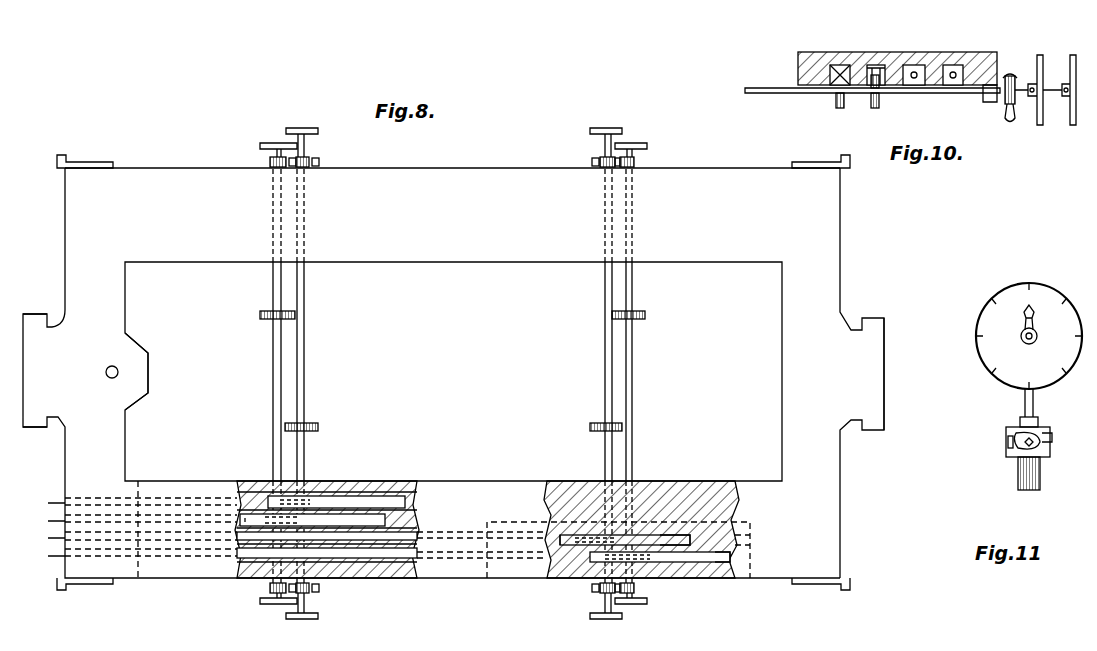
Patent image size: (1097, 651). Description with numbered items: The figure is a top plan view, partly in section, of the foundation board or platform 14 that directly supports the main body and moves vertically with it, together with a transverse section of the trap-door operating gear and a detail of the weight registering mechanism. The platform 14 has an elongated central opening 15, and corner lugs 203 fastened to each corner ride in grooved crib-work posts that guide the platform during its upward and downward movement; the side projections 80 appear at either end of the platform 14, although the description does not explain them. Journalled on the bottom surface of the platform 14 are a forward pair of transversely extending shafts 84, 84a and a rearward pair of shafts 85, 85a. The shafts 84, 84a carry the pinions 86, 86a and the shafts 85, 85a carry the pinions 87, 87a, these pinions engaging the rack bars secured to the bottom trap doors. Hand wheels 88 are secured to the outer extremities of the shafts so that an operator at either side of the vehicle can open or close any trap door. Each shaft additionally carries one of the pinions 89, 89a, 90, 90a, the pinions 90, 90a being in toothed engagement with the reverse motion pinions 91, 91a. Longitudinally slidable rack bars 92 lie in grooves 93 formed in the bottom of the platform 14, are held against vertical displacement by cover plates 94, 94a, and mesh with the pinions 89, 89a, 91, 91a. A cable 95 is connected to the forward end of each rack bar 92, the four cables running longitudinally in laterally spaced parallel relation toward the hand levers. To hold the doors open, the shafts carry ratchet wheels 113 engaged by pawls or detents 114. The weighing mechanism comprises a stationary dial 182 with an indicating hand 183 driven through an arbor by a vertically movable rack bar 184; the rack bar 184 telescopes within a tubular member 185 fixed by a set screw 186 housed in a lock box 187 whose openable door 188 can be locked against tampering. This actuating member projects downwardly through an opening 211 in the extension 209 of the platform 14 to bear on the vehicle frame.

In FIG. 8, the foundation board or platform 14 is at (453, 373).
In FIG. 10, the foundation board or platform 14 is at (990, 52).
In FIG. 8, the elongated central opening 15 is at (453, 371).
In FIG. 8, the end protrusion 80 is at (44, 424).
In FIG. 8, the transversely extending shaft 84 is at (273, 396).
In FIG. 10, the transversely extending shaft 84 is at (900, 93).
In FIG. 8, the transversely extending shaft 84a is at (305, 396).
In FIG. 8, the transversely extending shaft 85 is at (605, 404).
In FIG. 8, the transversely extending shaft 85a is at (633, 398).
In FIG. 8, the pinion 86 is at (260, 322).
In FIG. 8, the pinion 86a is at (318, 427).
In FIG. 8, the pinion 87 is at (590, 427).
In FIG. 8, the pinion 87a is at (645, 315).
In FIG. 8, the hand wheel 88 is at (276, 144).
In FIG. 10, the hand wheel 88 is at (1072, 118).
In FIG. 8, the pinion 89 is at (262, 481).
In FIG. 10, the pinion 89 is at (875, 108).
In FIG. 8, the pinion 89a is at (300, 481).
In FIG. 8, the pinion 90 is at (610, 500).
In FIG. 8, the pinion 90a is at (640, 585).
In FIG. 8, the reverse motion pinion 91 is at (575, 560).
In FIG. 8, the reverse motion pinion 91a is at (680, 585).
In FIG. 8, the rack bar 92 is at (345, 500).
In FIG. 10, the rack bar 92 is at (914, 65).
In FIG. 8, the groove 93 is at (425, 560).
In FIG. 8, the cover plate 94 is at (136, 568).
In FIG. 10, the cover plate 94 is at (800, 88).
In FIG. 8, the cover plate 94a is at (487, 570).
In FIG. 8, the cable 95 is at (48, 556).
In FIG. 8, the ratchet wheel 113 is at (270, 163).
In FIG. 10, the ratchet wheel 113 is at (1015, 76).
In FIG. 8, the pawl or detent 114 is at (293, 158).
In FIG. 10, the pawl or detent 114 is at (1005, 115).
In FIG. 11, the stationary dial 182 is at (985, 295).
In FIG. 11, the indicating hand 183 is at (1042, 303).
In FIG. 11, the rack bar 184 is at (1034, 405).
In FIG. 11, the tubular member 185 is at (1020, 420).
In FIG. 11, the set screw 186 is at (1048, 446).
In FIG. 11, the lock box 187 is at (1052, 432).
In FIG. 11, the openable door 188 is at (1012, 448).
In FIG. 8, the corner lug 203 is at (70, 156).
In FIG. 8, the extension 209 is at (150, 376).
In FIG. 8, the opening 211 is at (110, 365).